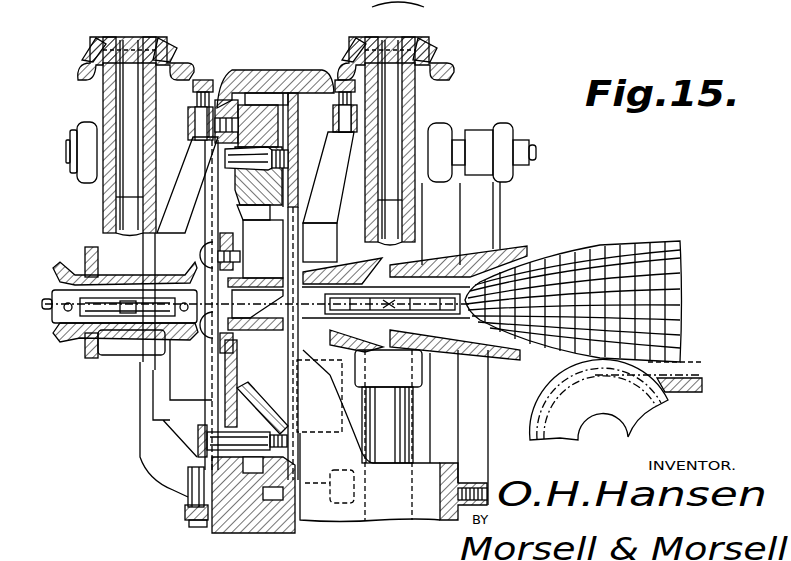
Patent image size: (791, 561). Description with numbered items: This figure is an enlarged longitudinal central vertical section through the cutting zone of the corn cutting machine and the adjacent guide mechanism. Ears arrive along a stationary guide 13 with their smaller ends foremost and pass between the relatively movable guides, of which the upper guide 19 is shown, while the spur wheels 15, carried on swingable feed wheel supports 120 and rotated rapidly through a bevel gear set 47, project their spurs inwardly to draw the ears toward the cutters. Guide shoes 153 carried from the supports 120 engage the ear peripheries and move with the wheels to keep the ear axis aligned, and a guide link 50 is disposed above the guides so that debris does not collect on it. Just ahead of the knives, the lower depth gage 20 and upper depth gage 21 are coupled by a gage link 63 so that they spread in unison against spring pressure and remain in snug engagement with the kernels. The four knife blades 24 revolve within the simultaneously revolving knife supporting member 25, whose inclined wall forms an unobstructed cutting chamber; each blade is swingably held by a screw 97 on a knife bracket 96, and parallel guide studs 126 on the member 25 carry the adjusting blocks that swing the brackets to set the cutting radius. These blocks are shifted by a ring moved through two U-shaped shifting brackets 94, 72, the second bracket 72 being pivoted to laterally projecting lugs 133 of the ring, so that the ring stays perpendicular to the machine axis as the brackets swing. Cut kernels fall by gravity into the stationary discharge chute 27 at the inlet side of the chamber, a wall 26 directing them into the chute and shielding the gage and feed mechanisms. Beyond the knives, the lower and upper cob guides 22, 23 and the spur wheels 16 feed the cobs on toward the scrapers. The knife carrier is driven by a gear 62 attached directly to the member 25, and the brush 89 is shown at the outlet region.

The stationary guide 13 is at (680, 390).
The spur wheels 15 is at (406, 270).
The spur wheels 16 is at (120, 298).
The upper guide 19 is at (448, 262).
The lower depth gage 20 is at (376, 352).
The upper depth gage 21 is at (364, 264).
The lower cob guide 22 is at (190, 345).
The upper cob guide 23 is at (196, 262).
The knife blades 24 is at (240, 330).
The knife supporting member 25 is at (250, 205).
The wall 26 is at (326, 386).
The discharge chute 27 is at (320, 482).
The bevel gear set 47 is at (432, 66).
The guide link 50 is at (446, 180).
The gear 62 is at (292, 522).
The gage link 63 is at (94, 108).
The second U-shaped shifting bracket 72 is at (320, 221).
The brush 89 is at (634, 244).
The U-shaped shifting bracket 94 is at (175, 165).
The knife bracket 96 is at (236, 260).
The screw 97 is at (246, 438).
The feed wheel supports 120 is at (113, 219).
The guide studs 126 is at (286, 150).
The laterally projecting lugs 133 is at (304, 70).
The guide shoes 153 is at (52, 306).